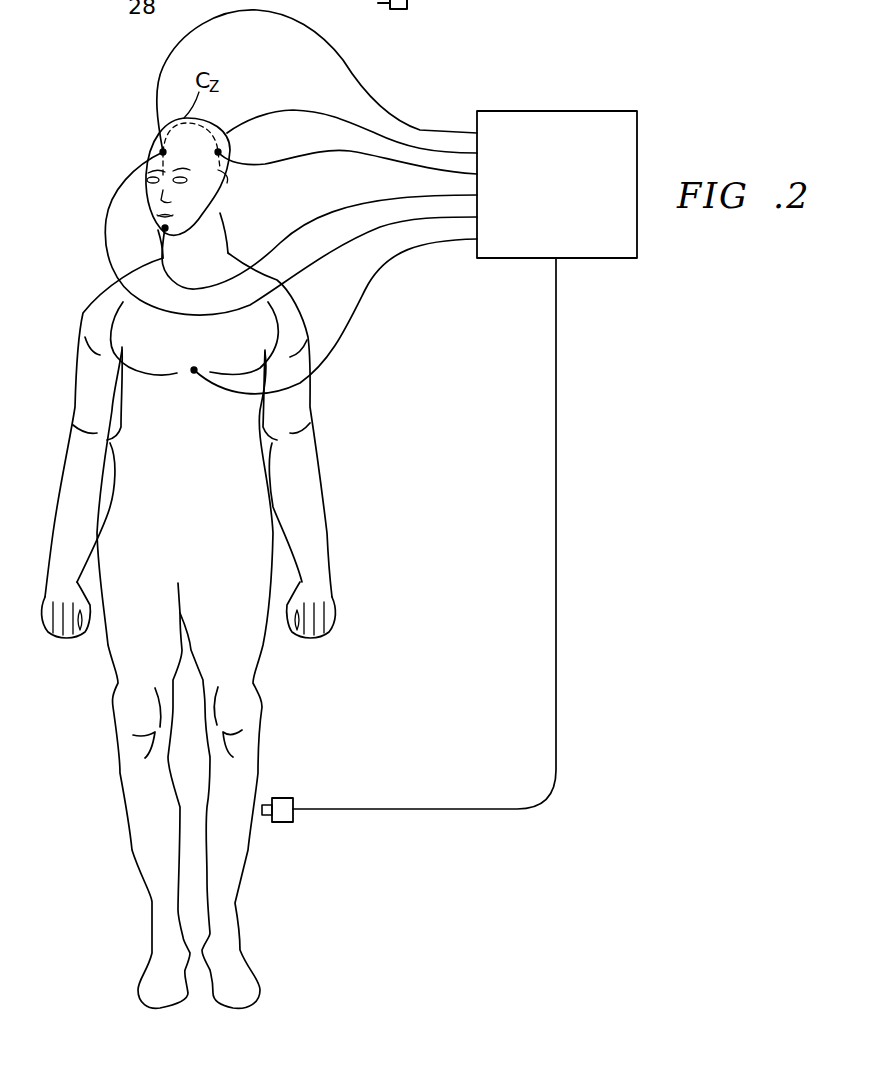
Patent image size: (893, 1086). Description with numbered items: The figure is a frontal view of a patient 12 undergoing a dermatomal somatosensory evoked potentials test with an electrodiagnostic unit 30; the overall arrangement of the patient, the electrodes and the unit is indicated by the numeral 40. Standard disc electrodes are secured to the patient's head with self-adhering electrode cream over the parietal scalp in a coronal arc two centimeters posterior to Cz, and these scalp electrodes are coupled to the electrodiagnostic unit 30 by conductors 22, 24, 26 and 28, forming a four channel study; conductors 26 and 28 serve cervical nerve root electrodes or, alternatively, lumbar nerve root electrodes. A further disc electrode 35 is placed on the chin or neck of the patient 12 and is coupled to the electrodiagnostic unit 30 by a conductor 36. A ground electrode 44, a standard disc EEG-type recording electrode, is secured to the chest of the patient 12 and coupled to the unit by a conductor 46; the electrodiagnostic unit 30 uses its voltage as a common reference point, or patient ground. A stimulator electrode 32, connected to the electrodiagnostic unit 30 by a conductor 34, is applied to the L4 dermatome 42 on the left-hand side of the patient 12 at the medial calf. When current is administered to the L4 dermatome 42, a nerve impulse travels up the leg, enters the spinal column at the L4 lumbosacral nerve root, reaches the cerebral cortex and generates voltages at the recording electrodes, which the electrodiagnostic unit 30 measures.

The patient 12 is at (85, 315).
The conductor 22 is at (294, 110).
The conductor 24 is at (104, 205).
The conductor 26 is at (307, 153).
The conductor 28 is at (424, 122).
The electrodiagnostic unit 30 is at (600, 111).
The stimulator electrode 32 is at (288, 823).
The conductor 34 is at (447, 811).
The disc electrode 35 is at (163, 231).
The conductor 36 is at (288, 237).
The monitoring system 40 is at (109, 119).
The L4 dermatome 42 is at (283, 797).
The ground electrode 44 is at (193, 374).
The conductor 46 is at (394, 258).